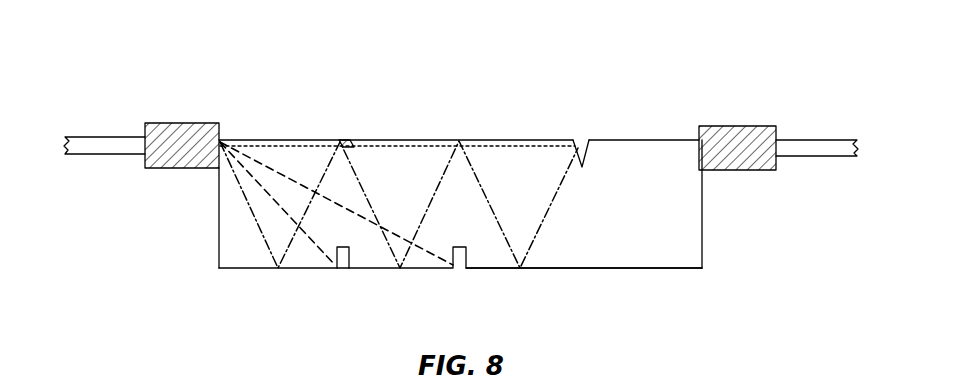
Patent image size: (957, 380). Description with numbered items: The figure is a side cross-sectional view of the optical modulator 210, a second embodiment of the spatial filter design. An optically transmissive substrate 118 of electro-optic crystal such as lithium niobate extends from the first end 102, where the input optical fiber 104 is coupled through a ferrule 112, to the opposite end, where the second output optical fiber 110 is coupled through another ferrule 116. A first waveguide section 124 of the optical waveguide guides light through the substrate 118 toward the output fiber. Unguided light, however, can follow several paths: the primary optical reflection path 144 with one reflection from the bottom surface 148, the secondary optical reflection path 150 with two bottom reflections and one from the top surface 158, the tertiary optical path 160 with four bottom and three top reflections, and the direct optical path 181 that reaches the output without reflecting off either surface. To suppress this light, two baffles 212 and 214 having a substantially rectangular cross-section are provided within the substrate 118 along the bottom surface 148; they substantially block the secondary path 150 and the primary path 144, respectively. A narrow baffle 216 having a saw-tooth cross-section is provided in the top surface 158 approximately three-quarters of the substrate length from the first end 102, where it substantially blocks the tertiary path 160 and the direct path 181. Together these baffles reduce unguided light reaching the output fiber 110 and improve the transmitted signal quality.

The optical modulator 210 is at (572, 66).
The input optical fiber 104 is at (105, 136).
The ferrule 112 is at (170, 122).
The second output optical fiber 110 is at (815, 139).
The ferrule 116 is at (747, 125).
The first end 102 is at (218, 217).
The top surface 158 is at (263, 138).
The narrow baffle 216 is at (582, 136).
The optically transmissive substrate 118 is at (223, 256).
The baffle 212 is at (341, 277).
The baffle 214 is at (459, 277).
The bottom surface 148 is at (607, 270).
The direct optical path 181 is at (488, 146).
The first waveguide section 124 is at (347, 140).
The tertiary optical path 160 is at (370, 192).
The secondary optical reflection path 150 is at (318, 243).
The primary optical reflection path 144 is at (437, 258).